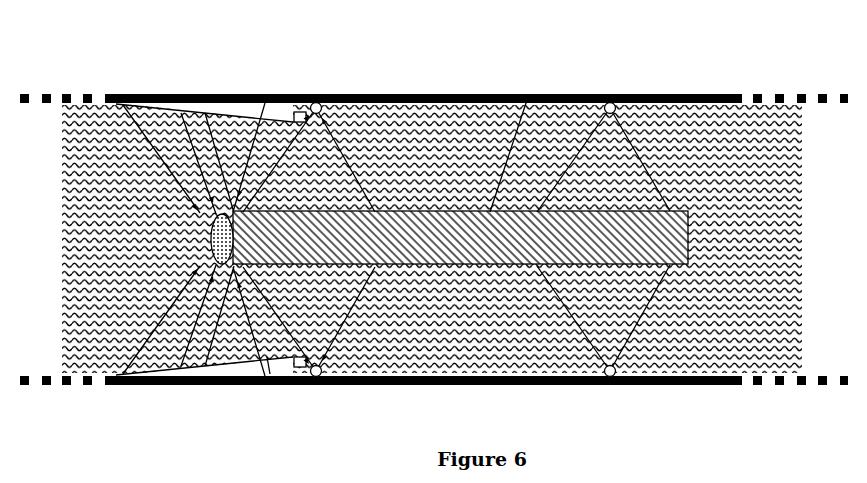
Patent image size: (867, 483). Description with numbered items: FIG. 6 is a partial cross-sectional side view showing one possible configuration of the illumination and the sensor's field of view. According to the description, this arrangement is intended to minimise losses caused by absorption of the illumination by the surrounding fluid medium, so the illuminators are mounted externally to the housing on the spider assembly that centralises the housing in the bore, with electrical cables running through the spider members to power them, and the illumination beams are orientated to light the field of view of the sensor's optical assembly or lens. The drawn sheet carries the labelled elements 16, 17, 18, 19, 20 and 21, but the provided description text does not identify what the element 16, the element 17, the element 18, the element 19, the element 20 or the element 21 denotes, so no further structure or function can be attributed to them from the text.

The light ray 16 is at (528, 97).
The reflective layer 17 is at (470, 95).
The light-transmitting medium 18 is at (368, 97).
The light source 19 is at (302, 110).
The transparent wedge 20 is at (245, 108).
The light path 21 is at (181, 113).